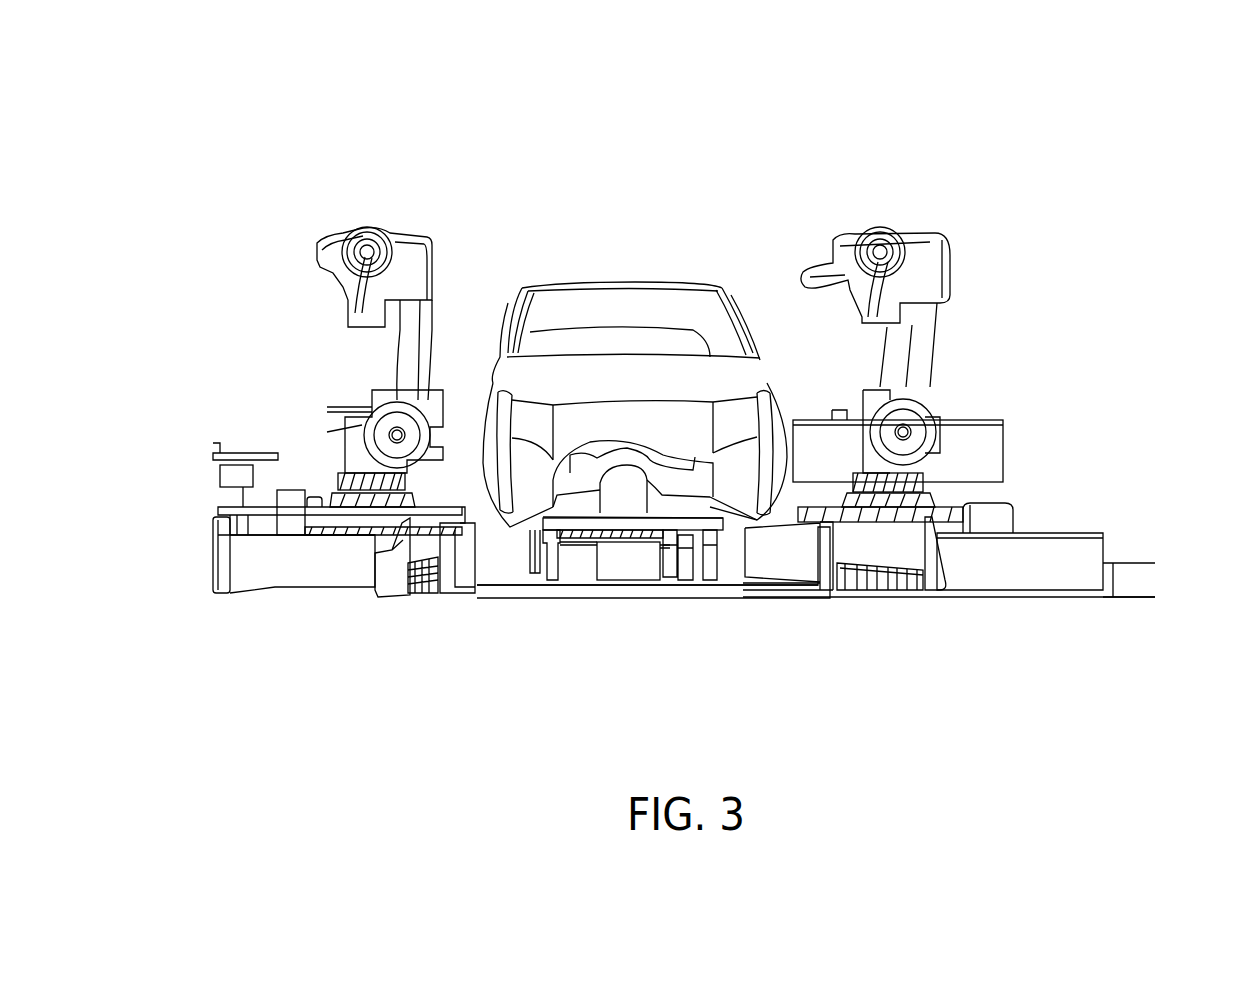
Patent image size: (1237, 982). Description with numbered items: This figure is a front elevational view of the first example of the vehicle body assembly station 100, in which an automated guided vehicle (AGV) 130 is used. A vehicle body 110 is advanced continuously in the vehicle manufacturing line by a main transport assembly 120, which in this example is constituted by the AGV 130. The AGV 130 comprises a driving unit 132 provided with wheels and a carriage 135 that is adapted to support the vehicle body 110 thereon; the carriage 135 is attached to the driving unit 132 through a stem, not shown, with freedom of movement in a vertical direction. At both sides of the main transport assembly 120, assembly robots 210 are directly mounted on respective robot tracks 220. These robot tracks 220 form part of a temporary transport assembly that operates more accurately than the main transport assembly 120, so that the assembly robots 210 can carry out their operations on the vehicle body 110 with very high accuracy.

The vehicle body assembly station 100 is at (1065, 298).
The vehicle body 110 is at (565, 285).
The main transport assembly 120 is at (655, 585).
The automated guided vehicle (AGV) 130 is at (639, 607).
The driving unit 132 is at (616, 570).
The carriage 135 is at (550, 520).
The assembly robots 210 is at (340, 243).
The robot tracks 220 is at (348, 518).